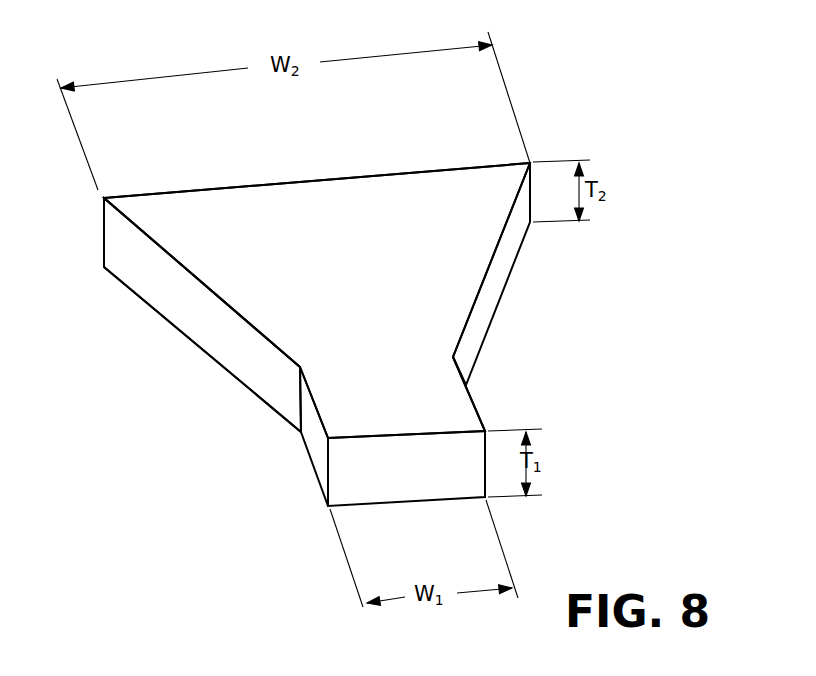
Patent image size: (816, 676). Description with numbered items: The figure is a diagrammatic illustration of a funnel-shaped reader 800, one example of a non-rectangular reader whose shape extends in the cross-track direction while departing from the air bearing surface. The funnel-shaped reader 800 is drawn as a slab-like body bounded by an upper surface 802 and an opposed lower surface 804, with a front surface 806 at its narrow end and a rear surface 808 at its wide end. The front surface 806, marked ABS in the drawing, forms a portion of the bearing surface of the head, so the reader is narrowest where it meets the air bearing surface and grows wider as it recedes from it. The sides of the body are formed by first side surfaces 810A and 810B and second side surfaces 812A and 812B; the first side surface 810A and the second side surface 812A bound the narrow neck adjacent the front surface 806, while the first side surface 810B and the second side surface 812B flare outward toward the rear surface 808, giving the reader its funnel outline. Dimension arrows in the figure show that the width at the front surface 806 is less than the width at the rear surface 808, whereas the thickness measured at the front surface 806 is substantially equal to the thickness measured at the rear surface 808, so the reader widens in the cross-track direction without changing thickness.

The funnel-shaped reader 800 is at (619, 168).
The upper surface 802 is at (326, 203).
The lower surface 804 is at (270, 426).
The front surface 806 is at (347, 496).
The rear surface 808 is at (187, 190).
The first side surface 810A is at (325, 458).
The first side surface 810B is at (130, 252).
The second side surface 812A is at (473, 404).
The second side surface 812B is at (490, 287).